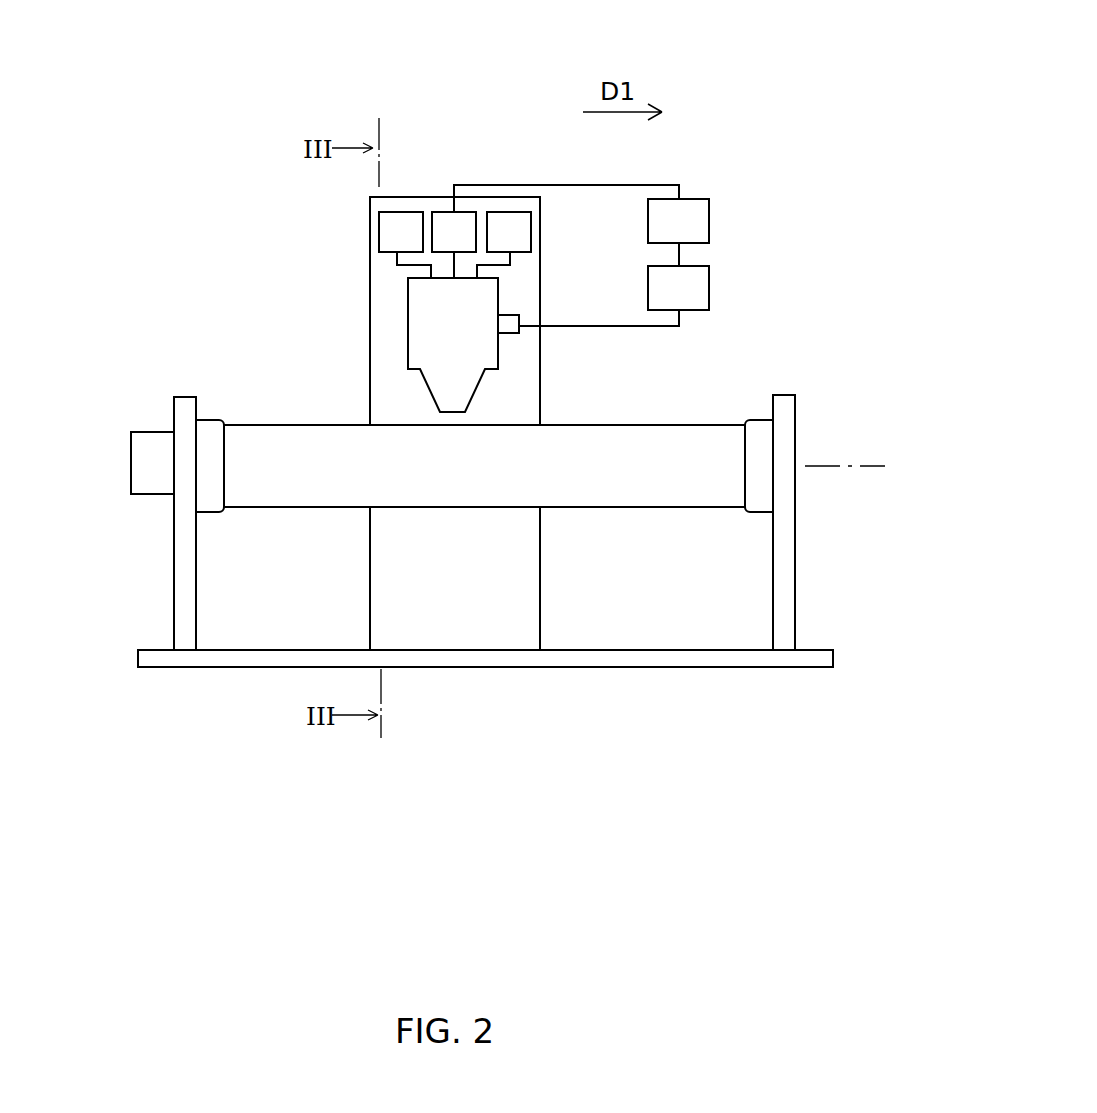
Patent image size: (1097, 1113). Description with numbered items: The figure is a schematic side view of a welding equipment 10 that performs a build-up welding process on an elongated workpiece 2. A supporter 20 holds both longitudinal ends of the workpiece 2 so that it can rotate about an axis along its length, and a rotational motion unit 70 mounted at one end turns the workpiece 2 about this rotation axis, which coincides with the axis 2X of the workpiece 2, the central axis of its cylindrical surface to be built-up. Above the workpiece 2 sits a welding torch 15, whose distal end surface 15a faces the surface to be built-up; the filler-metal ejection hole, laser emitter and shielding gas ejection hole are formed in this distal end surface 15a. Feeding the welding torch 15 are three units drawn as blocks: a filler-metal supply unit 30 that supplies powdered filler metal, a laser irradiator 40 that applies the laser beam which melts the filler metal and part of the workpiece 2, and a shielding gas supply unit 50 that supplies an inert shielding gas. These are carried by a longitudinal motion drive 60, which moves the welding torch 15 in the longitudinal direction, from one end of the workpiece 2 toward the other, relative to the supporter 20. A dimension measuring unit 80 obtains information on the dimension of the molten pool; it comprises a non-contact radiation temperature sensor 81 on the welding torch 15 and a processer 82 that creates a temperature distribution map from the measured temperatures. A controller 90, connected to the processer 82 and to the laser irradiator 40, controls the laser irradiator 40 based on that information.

The welding equipment 10 is at (797, 84).
The supporter 20 is at (158, 572).
The longitudinal motion drive 60 is at (543, 292).
The workpiece 2 is at (668, 424).
The rotational motion unit 70 is at (131, 463).
The axis of the workpiece 2X is at (870, 461).
The welding torch 15 is at (408, 293).
The distal end surface 15a is at (453, 412).
The shielding gas supply unit 50 is at (379, 230).
The laser irradiator 40 is at (461, 212).
The filler-metal supply unit 30 is at (513, 212).
The temperature sensor 81 is at (510, 314).
The dimension measuring unit 80 is at (743, 320).
The controller 90 is at (710, 222).
The processer 82 is at (710, 289).